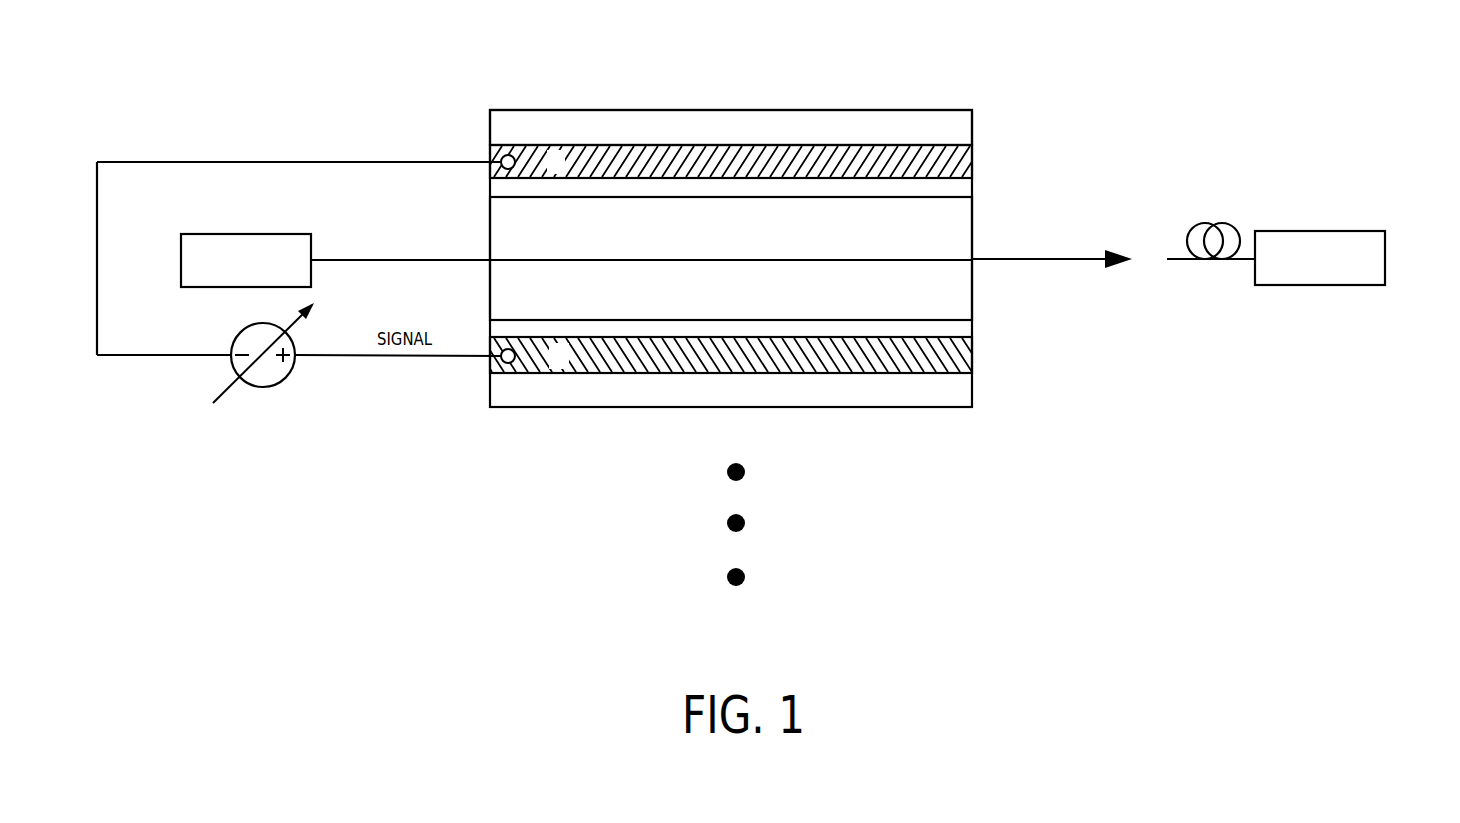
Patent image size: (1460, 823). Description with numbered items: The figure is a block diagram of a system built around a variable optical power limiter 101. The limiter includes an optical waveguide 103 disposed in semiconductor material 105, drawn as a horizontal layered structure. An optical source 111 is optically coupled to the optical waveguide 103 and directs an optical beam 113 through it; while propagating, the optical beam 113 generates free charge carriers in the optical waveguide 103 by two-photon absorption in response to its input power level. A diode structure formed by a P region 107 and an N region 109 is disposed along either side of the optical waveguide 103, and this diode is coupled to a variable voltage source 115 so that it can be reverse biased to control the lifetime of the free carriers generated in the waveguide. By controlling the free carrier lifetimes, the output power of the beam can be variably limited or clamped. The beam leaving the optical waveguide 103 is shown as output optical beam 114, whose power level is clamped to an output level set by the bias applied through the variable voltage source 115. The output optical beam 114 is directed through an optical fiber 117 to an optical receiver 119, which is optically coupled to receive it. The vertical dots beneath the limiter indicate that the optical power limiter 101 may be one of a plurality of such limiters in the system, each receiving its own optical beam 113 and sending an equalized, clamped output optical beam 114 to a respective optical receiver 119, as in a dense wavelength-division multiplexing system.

The variable optical power limiter 101 is at (765, 75).
The optical waveguide 103 is at (972, 310).
The semiconductor material 105 is at (830, 110).
The P region 107 is at (972, 162).
The N region 109 is at (972, 354).
The optical source 111 is at (181, 258).
The optical beam 113 is at (397, 260).
The output optical beam 114 is at (1063, 259).
The variable voltage source 115 is at (287, 378).
The optical fiber 117 is at (1233, 260).
The optical receiver 119 is at (1385, 259).